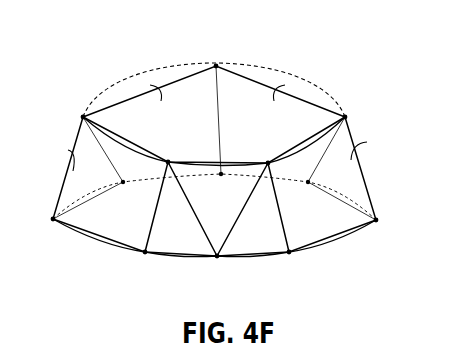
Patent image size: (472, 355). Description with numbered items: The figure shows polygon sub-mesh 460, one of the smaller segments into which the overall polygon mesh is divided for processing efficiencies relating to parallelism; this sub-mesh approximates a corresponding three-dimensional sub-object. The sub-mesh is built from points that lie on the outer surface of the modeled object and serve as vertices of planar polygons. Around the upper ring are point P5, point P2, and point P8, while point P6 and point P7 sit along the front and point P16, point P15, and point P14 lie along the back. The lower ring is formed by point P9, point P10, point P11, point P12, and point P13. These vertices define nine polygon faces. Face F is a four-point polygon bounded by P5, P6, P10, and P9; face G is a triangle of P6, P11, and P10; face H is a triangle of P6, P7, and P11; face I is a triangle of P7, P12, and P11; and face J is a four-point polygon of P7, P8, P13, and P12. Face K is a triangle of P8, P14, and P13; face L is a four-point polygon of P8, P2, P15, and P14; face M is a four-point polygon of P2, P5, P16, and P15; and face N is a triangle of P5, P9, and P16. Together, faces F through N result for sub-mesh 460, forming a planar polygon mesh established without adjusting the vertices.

The polygon sub-mesh 460 is at (237, 32).
The point P2 is at (223, 74).
The point P5 is at (76, 113).
The point P6 is at (175, 157).
The point P7 is at (260, 158).
The point P8 is at (352, 112).
The point P9 is at (45, 215).
The point P10 is at (135, 257).
The point P11 is at (208, 262).
The point P12 is at (281, 259).
The point P13 is at (384, 227).
The point P14 is at (303, 189).
The point P15 is at (231, 172).
The point P16 is at (116, 192).